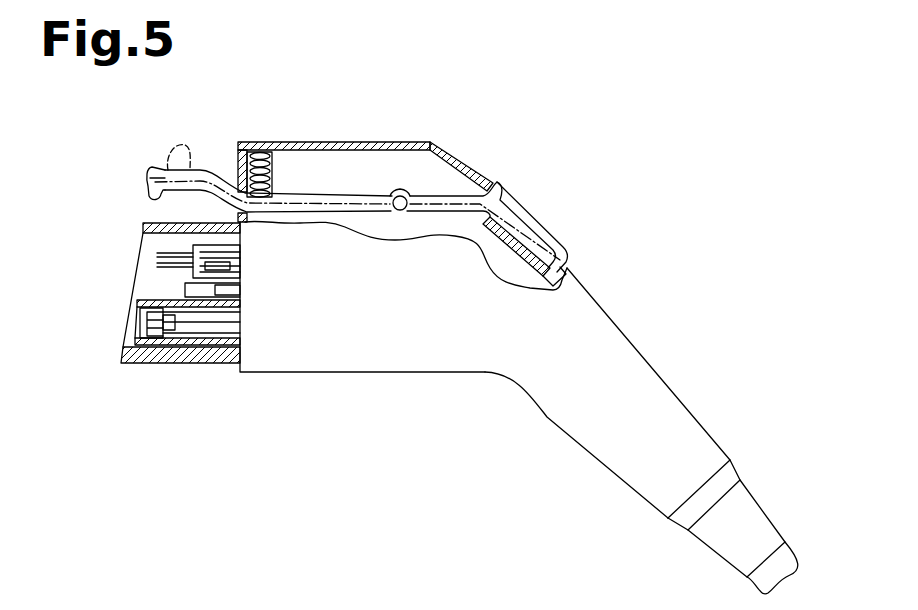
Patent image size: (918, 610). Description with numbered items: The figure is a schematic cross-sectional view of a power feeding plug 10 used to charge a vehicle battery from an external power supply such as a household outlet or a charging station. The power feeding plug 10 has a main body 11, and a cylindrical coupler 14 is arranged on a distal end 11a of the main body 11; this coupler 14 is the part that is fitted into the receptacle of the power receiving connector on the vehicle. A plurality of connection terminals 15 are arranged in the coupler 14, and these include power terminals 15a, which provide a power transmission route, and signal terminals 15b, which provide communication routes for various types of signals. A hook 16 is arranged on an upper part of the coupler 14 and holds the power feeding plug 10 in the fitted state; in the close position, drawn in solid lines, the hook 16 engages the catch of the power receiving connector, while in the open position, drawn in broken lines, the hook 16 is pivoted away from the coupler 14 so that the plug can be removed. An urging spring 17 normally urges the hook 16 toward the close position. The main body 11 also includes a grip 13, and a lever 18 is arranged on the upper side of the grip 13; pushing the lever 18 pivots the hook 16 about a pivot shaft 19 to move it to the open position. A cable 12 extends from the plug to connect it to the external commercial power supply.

The power feeding plug 10 is at (687, 125).
The main body 11 is at (406, 142).
The distal end 11a is at (262, 142).
The cable 12 is at (750, 585).
The grip 13 is at (660, 368).
The coupler 14 is at (160, 223).
The connection terminals 15 is at (62, 252).
The power terminals 15a is at (140, 322).
The signal terminals 15b is at (140, 262).
The hook 16 is at (167, 146).
The urging spring 17 is at (243, 157).
The lever 18 is at (543, 208).
The pivot shaft 19 is at (427, 185).